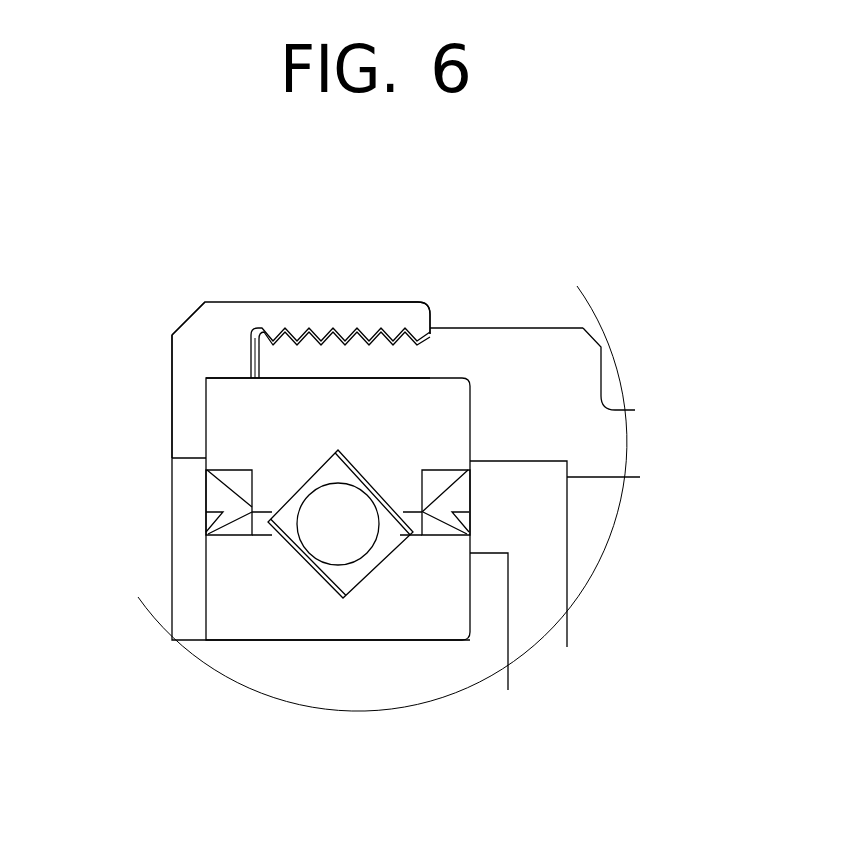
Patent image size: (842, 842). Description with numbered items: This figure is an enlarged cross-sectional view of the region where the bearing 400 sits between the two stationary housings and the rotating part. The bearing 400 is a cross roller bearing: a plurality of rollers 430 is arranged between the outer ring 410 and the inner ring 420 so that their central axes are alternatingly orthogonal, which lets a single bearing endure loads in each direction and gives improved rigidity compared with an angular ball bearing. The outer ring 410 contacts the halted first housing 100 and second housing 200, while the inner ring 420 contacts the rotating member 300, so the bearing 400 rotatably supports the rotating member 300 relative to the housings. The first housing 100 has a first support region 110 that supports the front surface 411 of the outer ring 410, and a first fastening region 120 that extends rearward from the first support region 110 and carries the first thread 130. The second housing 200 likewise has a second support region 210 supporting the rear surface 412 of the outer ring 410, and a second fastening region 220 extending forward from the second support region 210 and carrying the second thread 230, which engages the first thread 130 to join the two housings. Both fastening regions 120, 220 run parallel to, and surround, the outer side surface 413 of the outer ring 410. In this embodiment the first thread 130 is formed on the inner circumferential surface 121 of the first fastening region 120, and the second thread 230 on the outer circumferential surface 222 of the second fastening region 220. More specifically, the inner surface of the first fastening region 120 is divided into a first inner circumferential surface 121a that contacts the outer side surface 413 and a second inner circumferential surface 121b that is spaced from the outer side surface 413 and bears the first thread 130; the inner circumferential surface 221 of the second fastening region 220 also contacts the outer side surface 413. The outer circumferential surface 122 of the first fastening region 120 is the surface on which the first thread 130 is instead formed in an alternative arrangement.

The first housing 100 is at (259, 409).
The first support region 110 is at (190, 401).
The first fastening region 120 is at (265, 318).
The inner circumferential surface 121 is at (318, 278).
The first inner circumferential surface 121a is at (225, 363).
The second inner circumferential surface 121b is at (311, 330).
The outer circumferential surface 122 is at (226, 317).
The first thread 130 is at (338, 322).
The second housing 200 is at (467, 295).
The second support region 210 is at (534, 395).
The second fastening region 220 is at (441, 299).
The inner circumferential surface 221 is at (405, 376).
The outer circumferential surface 222 is at (387, 330).
The second thread 230 is at (291, 351).
The rotating member 300 is at (490, 663).
The bearing 400 is at (423, 534).
The outer ring 410 is at (398, 509).
The front surface 411 is at (206, 432).
The rear surface 412 is at (470, 433).
The outer side surface 413 is at (290, 447).
The inner ring 420 is at (425, 578).
The rollers 430 is at (350, 527).